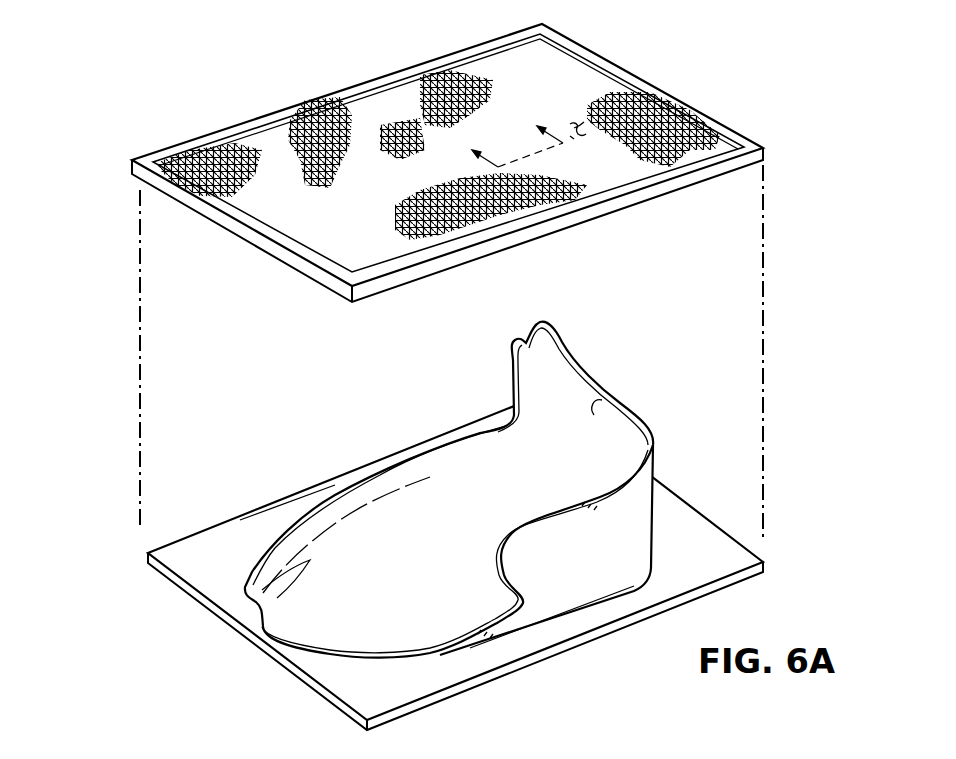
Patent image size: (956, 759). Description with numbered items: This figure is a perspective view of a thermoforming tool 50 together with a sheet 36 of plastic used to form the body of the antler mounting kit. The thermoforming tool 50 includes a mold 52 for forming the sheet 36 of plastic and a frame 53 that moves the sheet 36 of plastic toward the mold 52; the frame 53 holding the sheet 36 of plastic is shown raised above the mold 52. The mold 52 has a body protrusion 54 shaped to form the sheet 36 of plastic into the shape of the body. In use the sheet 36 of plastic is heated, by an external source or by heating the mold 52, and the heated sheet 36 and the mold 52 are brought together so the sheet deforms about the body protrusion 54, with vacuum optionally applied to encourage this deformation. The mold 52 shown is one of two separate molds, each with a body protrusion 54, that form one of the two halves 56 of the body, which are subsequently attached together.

The sheet of plastic 36 is at (577, 78).
The thermoforming tool 50 is at (135, 355).
The mold 52 is at (220, 548).
The frame 53 is at (145, 161).
The body protrusion 54 is at (428, 463).
The half of the body 56 is at (238, 637).